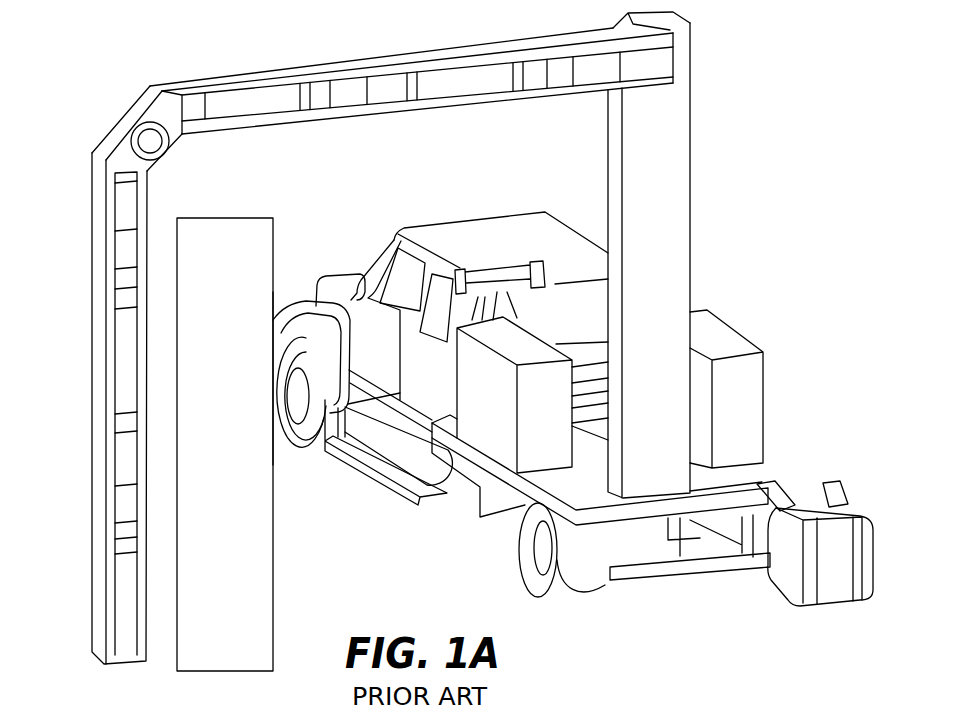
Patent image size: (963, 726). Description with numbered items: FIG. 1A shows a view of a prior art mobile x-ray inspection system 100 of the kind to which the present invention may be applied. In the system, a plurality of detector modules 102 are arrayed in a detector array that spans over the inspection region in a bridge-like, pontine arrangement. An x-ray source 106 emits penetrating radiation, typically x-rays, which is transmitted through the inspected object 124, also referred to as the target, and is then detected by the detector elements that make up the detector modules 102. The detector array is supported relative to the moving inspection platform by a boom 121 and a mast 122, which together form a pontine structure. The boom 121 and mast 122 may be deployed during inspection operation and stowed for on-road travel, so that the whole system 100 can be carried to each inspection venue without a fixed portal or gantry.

The mobile x-ray inspection system 100 is at (761, 107).
The detector modules 102 is at (127, 392).
The x-ray source 106 is at (811, 512).
The boom 121 is at (237, 80).
The mast 122 is at (683, 217).
The inspected object 124 is at (206, 602).